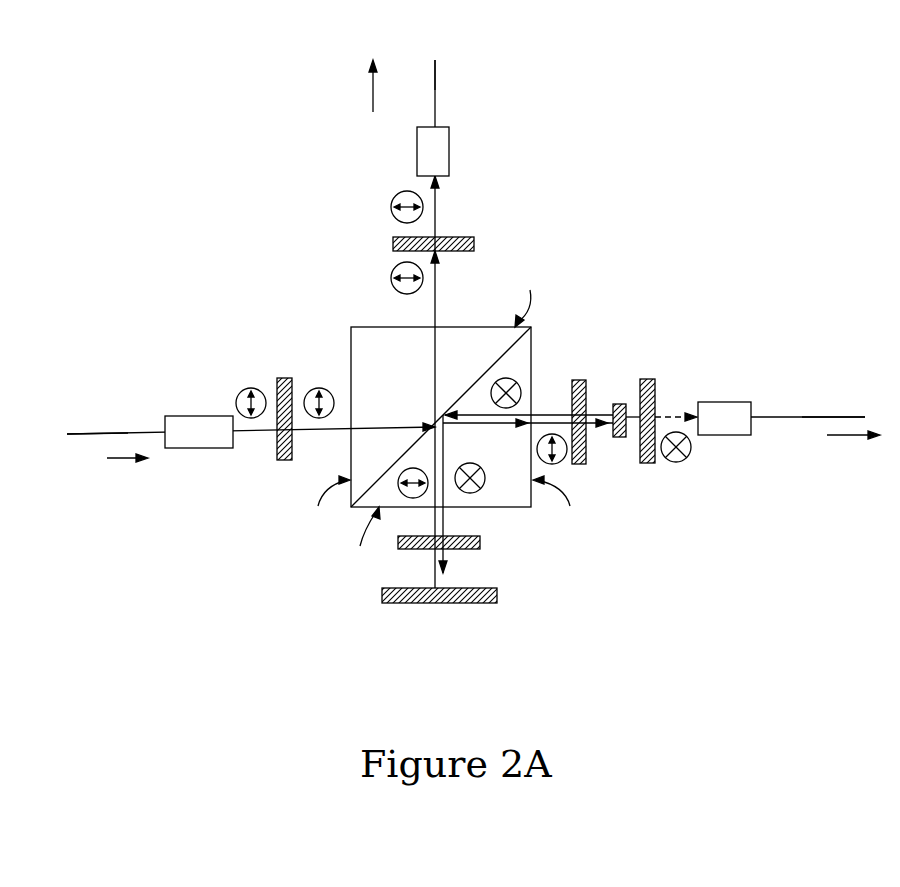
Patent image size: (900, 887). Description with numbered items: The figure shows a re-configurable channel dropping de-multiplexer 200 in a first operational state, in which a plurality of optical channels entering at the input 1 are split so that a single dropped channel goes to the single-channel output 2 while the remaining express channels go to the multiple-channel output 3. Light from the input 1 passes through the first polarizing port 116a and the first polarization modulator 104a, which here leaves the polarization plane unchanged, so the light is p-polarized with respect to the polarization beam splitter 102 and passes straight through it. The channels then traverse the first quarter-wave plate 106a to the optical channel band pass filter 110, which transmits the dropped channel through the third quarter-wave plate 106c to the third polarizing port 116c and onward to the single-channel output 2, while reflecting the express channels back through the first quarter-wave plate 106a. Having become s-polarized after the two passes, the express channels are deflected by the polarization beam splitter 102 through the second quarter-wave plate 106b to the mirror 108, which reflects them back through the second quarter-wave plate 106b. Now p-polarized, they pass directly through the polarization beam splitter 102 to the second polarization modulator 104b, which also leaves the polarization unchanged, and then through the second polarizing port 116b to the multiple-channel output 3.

The re-configurable channel dropping de-multiplexer 200 is at (222, 35).
The input 1 is at (128, 433).
The single-channel output 2 is at (802, 417).
The multiple-channel output 3 is at (435, 90).
The polarization beam splitter 102 is at (351, 327).
The first polarization modulator 104a is at (277, 455).
The second polarization modulator 104b is at (468, 237).
The first quarter-wave plate 106a is at (580, 380).
The second quarter-wave plate 106b is at (480, 542).
The third quarter-wave plate 106c is at (647, 379).
The mirror 108 is at (407, 603).
The optical channel band pass filter 110 is at (618, 437).
The first polarizing port 116a is at (195, 416).
The second polarizing port 116b is at (449, 150).
The third polarizing port 116c is at (725, 402).